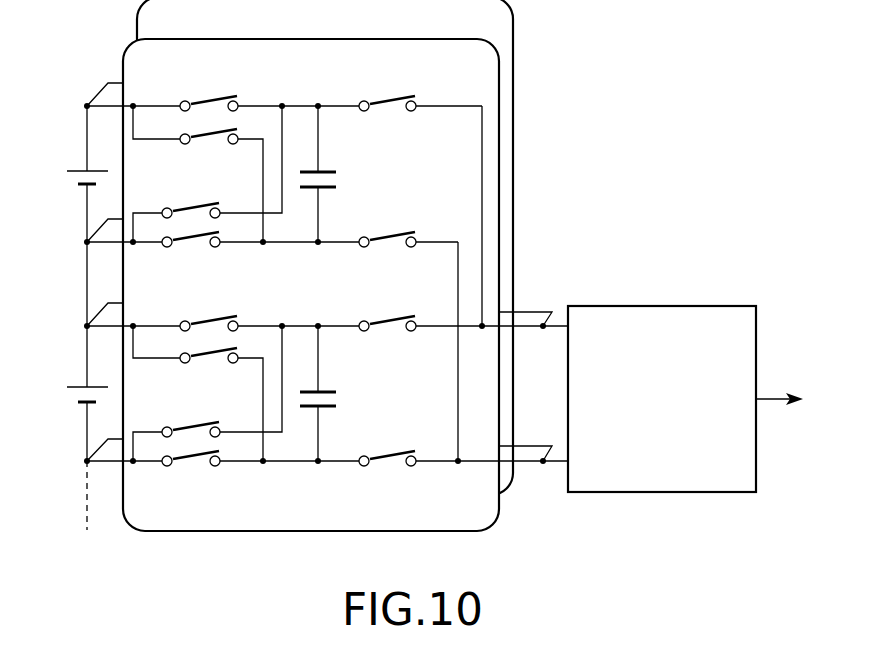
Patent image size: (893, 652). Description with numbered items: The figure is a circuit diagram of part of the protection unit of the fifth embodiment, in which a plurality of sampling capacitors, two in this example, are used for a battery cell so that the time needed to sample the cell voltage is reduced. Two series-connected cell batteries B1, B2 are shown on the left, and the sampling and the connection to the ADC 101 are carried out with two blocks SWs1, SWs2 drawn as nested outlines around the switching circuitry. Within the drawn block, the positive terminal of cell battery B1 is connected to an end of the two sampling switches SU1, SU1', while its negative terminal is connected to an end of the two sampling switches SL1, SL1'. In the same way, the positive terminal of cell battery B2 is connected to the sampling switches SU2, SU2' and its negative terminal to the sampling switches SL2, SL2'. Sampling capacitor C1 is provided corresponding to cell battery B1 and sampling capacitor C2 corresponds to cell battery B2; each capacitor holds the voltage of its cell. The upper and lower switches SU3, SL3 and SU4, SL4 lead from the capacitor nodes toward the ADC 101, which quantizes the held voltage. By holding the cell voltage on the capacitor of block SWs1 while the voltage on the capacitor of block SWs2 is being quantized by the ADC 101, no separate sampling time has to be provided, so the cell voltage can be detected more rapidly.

The ADC 101 is at (659, 306).
The cell battery B1 is at (70, 216).
The cell battery B2 is at (70, 393).
The sampling capacitor C1 is at (334, 174).
The sampling capacitor C2 is at (334, 393).
The sampling switch SU1 is at (211, 92).
The sampling switch SU1' is at (212, 149).
The sampling switch SL1 is at (184, 255).
The sampling switch SL1' is at (184, 196).
The sampling switch SU2 is at (211, 311).
The sampling switch SU2' is at (212, 368).
The sampling switch SL2 is at (184, 476).
The sampling switch SL2' is at (184, 415).
The sampling switch SU3 is at (375, 92).
The sampling switch SL3 is at (378, 257).
The sampling switch SU4 is at (394, 309).
The sampling switch SL4 is at (393, 478).
The switch block SWs1 is at (311, 285).
The switch block SWs2 is at (325, 247).